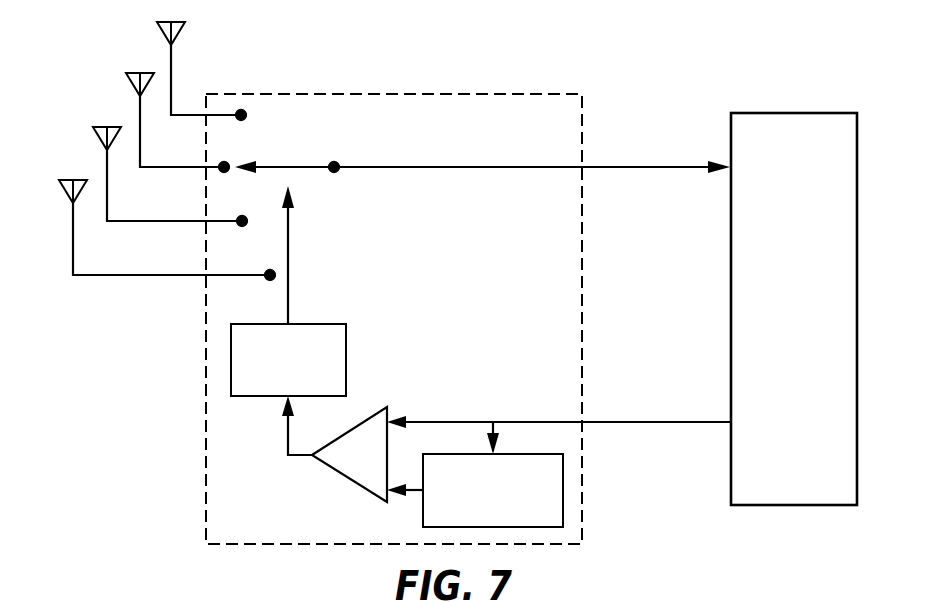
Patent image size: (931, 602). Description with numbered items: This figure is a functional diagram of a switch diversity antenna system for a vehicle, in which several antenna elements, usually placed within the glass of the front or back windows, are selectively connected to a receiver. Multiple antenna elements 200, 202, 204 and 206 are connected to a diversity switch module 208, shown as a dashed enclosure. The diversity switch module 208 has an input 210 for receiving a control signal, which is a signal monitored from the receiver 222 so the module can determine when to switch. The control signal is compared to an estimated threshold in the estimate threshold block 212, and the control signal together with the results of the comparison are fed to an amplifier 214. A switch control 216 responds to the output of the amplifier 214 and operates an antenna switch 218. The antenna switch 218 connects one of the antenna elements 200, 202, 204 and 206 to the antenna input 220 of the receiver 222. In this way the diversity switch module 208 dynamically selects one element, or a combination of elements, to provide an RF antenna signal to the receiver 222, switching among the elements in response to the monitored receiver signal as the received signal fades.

The antenna element 200 is at (63, 193).
The antenna element 202 is at (93, 138).
The antenna element 204 is at (125, 87).
The antenna element 206 is at (182, 27).
The diversity switch module 208 is at (438, 94).
The input 210 is at (583, 422).
The estimate threshold block 212 is at (420, 510).
The amplifier 214 is at (348, 480).
The switch control 216 is at (348, 363).
The antenna switch 218 is at (283, 157).
The antenna input 220 is at (647, 162).
The receiver 222 is at (792, 505).